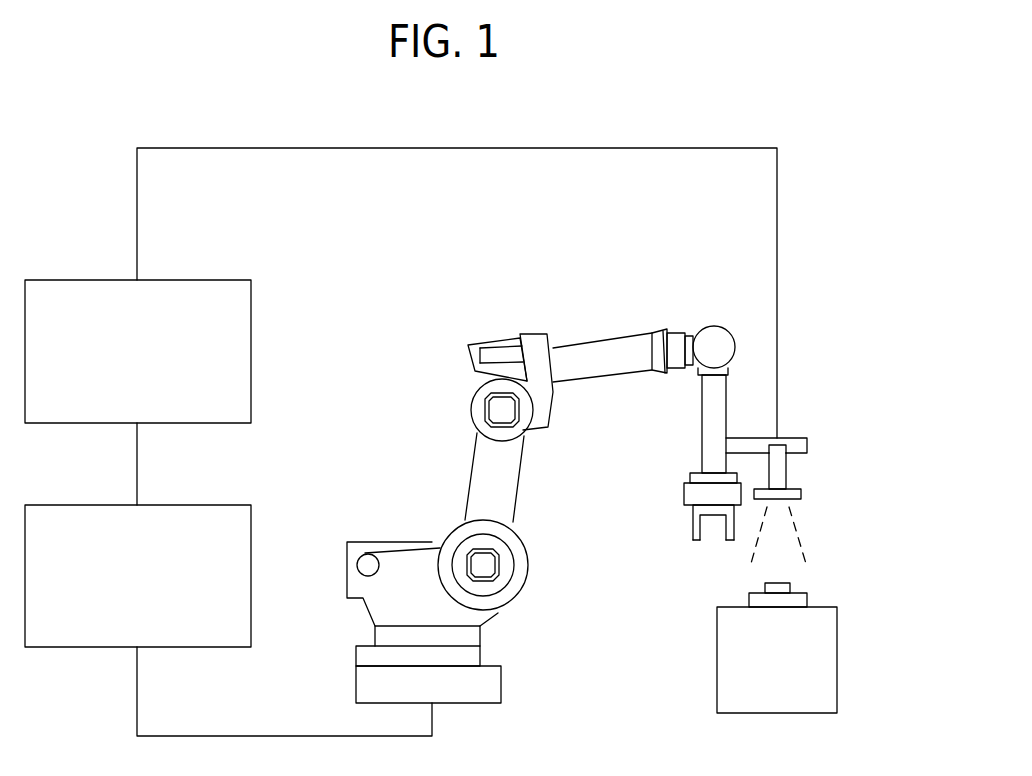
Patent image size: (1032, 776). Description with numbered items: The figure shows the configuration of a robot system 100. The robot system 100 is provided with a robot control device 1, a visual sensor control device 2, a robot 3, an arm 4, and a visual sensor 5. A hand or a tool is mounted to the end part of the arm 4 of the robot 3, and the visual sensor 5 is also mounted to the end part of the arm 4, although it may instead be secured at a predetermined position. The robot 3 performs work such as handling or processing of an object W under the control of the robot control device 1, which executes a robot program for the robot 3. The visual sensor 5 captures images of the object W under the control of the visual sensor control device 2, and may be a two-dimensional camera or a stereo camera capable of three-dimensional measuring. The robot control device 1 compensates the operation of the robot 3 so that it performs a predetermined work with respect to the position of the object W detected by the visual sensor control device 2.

The robot system 100 is at (840, 185).
The robot control device 1 is at (183, 505).
The visual sensor control device 2 is at (183, 280).
The robot 3 is at (410, 541).
The arm 4 is at (702, 445).
The visual sensor 5 is at (788, 470).
The object W is at (790, 588).